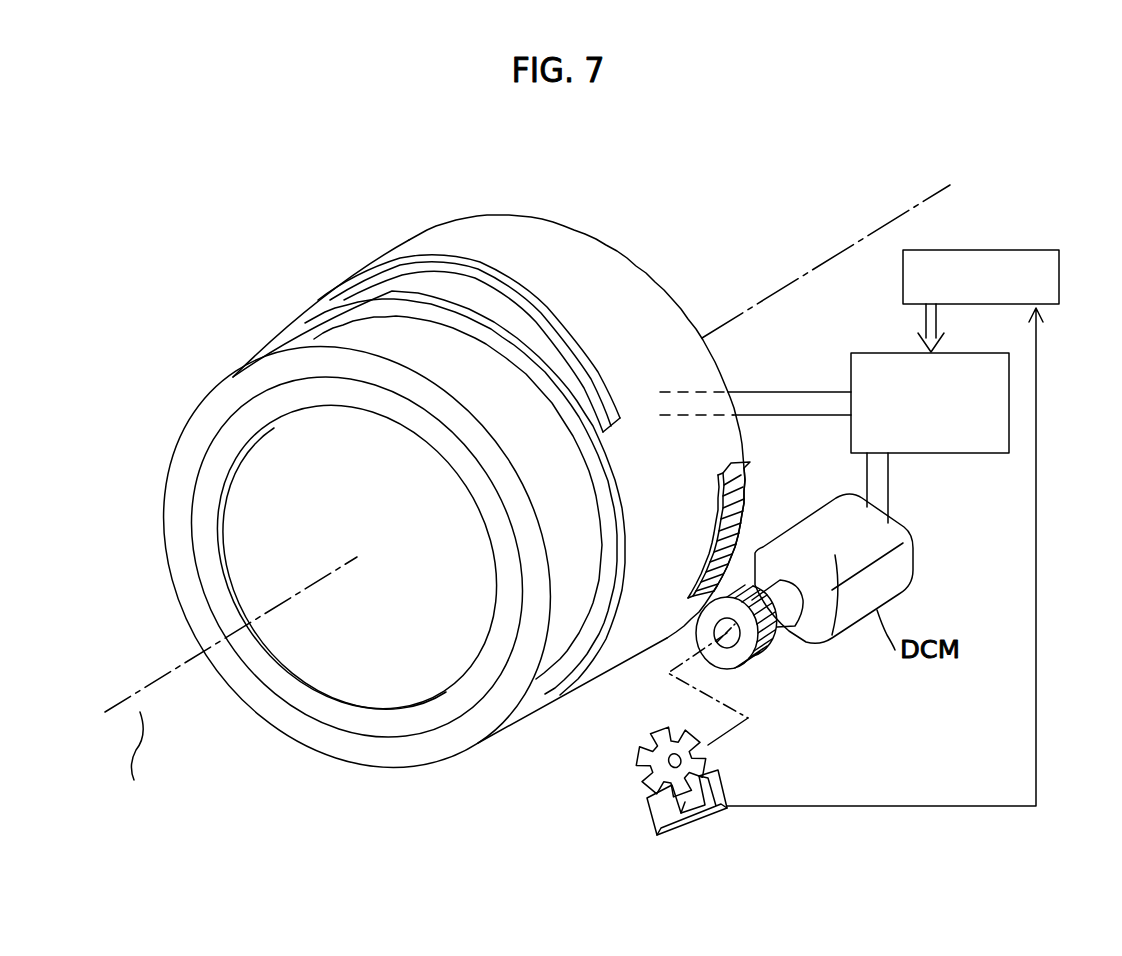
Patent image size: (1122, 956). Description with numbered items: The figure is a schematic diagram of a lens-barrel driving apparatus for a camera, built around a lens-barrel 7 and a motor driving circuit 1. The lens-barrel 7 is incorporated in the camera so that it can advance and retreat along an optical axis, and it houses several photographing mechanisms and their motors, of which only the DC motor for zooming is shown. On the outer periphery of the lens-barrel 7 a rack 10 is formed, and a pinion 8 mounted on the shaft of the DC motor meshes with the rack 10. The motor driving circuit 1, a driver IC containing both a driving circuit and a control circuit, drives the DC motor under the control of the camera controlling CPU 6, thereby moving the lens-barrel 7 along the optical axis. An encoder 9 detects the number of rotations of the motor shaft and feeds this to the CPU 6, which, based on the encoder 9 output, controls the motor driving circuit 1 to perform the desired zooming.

The motor driving circuit 1 is at (947, 455).
The CPU 6 is at (1059, 277).
The lens-barrel 7 is at (586, 236).
The pinion 8 is at (777, 642).
The encoder 9 is at (700, 820).
The rack 10 is at (713, 568).